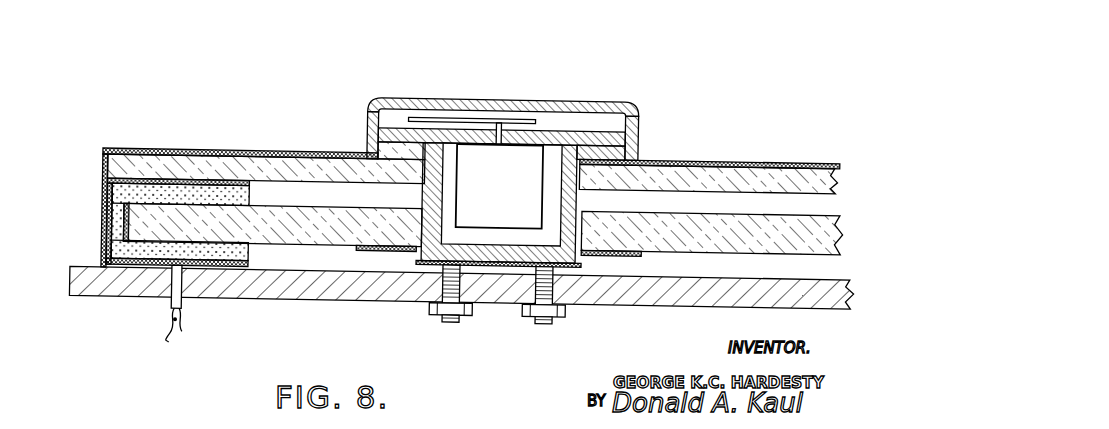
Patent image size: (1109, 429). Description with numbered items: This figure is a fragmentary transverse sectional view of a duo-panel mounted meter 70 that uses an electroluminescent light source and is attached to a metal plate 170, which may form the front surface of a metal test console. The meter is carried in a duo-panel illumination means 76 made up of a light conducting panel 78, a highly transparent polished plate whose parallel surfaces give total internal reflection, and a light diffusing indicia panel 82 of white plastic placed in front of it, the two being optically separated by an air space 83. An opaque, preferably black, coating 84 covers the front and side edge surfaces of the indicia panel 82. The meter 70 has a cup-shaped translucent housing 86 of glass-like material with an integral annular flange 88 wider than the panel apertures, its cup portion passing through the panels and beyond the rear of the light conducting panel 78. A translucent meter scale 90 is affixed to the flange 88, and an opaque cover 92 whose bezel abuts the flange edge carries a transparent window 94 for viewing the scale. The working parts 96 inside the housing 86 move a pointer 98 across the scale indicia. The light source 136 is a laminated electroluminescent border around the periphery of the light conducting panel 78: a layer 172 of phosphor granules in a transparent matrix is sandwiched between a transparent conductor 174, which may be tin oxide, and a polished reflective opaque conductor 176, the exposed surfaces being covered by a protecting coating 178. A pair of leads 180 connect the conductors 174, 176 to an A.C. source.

The meter 70 is at (522, 84).
The duo-panel illumination means 76 is at (843, 200).
The light conducting panel 78 is at (312, 243).
The indicia panel 82 is at (218, 163).
The air space 83 is at (293, 192).
The opaque coating 84 is at (146, 148).
The cup-shaped translucent housing 86 is at (425, 193).
The annular flange portion 88 is at (629, 158).
The meter scale 90 is at (552, 128).
The opaque cover 92 is at (640, 112).
The transparent window 94 is at (416, 100).
The working parts 96 is at (508, 191).
The pointer 98 is at (457, 112).
The light source 136 is at (101, 229).
The metal plate 170 is at (703, 300).
The layer of electroluminescent material 172 is at (112, 206).
The transparent electrical conductor 174 is at (110, 243).
The opaque electrical conductor 176 is at (141, 267).
The protecting coating 178 is at (107, 185).
The leads 180 is at (175, 334).